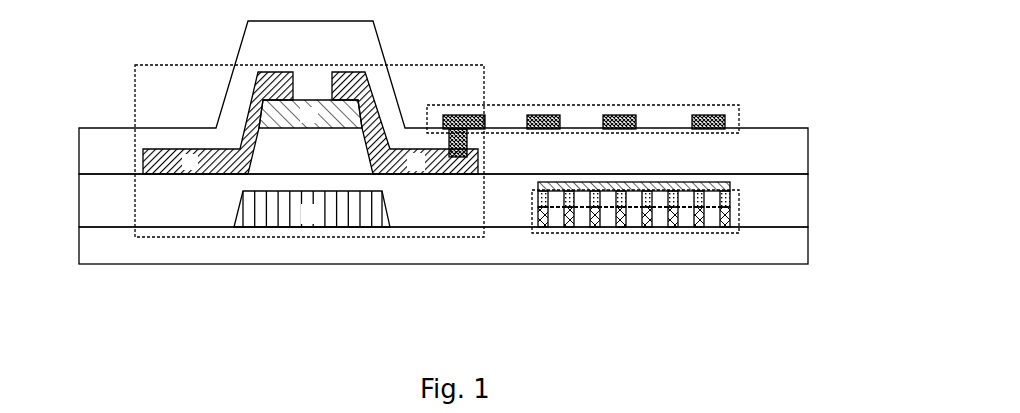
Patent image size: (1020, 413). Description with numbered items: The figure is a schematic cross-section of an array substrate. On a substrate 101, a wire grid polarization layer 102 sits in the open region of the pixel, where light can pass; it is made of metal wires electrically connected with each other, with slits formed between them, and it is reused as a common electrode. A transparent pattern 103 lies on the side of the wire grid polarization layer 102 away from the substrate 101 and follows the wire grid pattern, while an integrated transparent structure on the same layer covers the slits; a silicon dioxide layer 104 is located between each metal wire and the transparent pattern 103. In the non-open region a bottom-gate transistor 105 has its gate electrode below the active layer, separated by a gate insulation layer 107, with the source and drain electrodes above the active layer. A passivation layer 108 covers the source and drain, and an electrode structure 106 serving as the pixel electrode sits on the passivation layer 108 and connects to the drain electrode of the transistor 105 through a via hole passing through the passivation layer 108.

The substrate 101 is at (808, 245).
The wire grid polarization layer 102 is at (739, 218).
The transparent pattern 103 is at (730, 186).
The silicon dioxide layer 104 is at (533, 198).
The transistor 105 is at (309, 238).
The electrode structure 106 is at (739, 121).
The gate insulation layer 107 is at (79, 201).
The passivation layer 108 is at (79, 159).